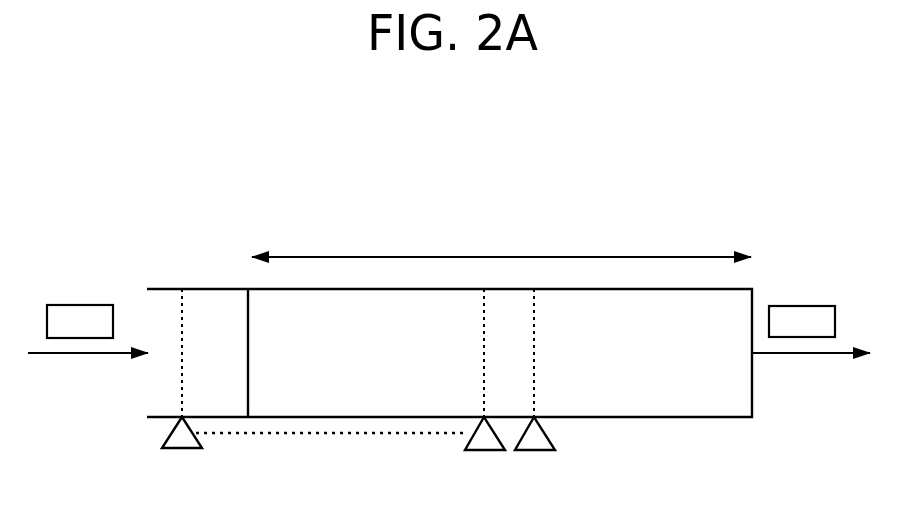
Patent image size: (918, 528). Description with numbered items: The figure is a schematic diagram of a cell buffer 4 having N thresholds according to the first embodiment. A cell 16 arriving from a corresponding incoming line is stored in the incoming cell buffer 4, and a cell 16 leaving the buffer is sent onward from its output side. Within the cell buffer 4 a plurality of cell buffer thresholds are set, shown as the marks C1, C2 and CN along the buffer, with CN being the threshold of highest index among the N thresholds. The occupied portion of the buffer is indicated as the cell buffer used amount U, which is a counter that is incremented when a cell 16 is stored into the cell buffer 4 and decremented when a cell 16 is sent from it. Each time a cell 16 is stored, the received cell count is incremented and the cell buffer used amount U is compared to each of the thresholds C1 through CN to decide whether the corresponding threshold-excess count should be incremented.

The incoming cell buffer 4 is at (635, 418).
The cell 16 is at (65, 305).
The cell buffer threshold CN is at (182, 388).
The cell buffer threshold C2 is at (485, 389).
The cell buffer threshold C1 is at (535, 389).
The cell buffer used amount U is at (501, 236).